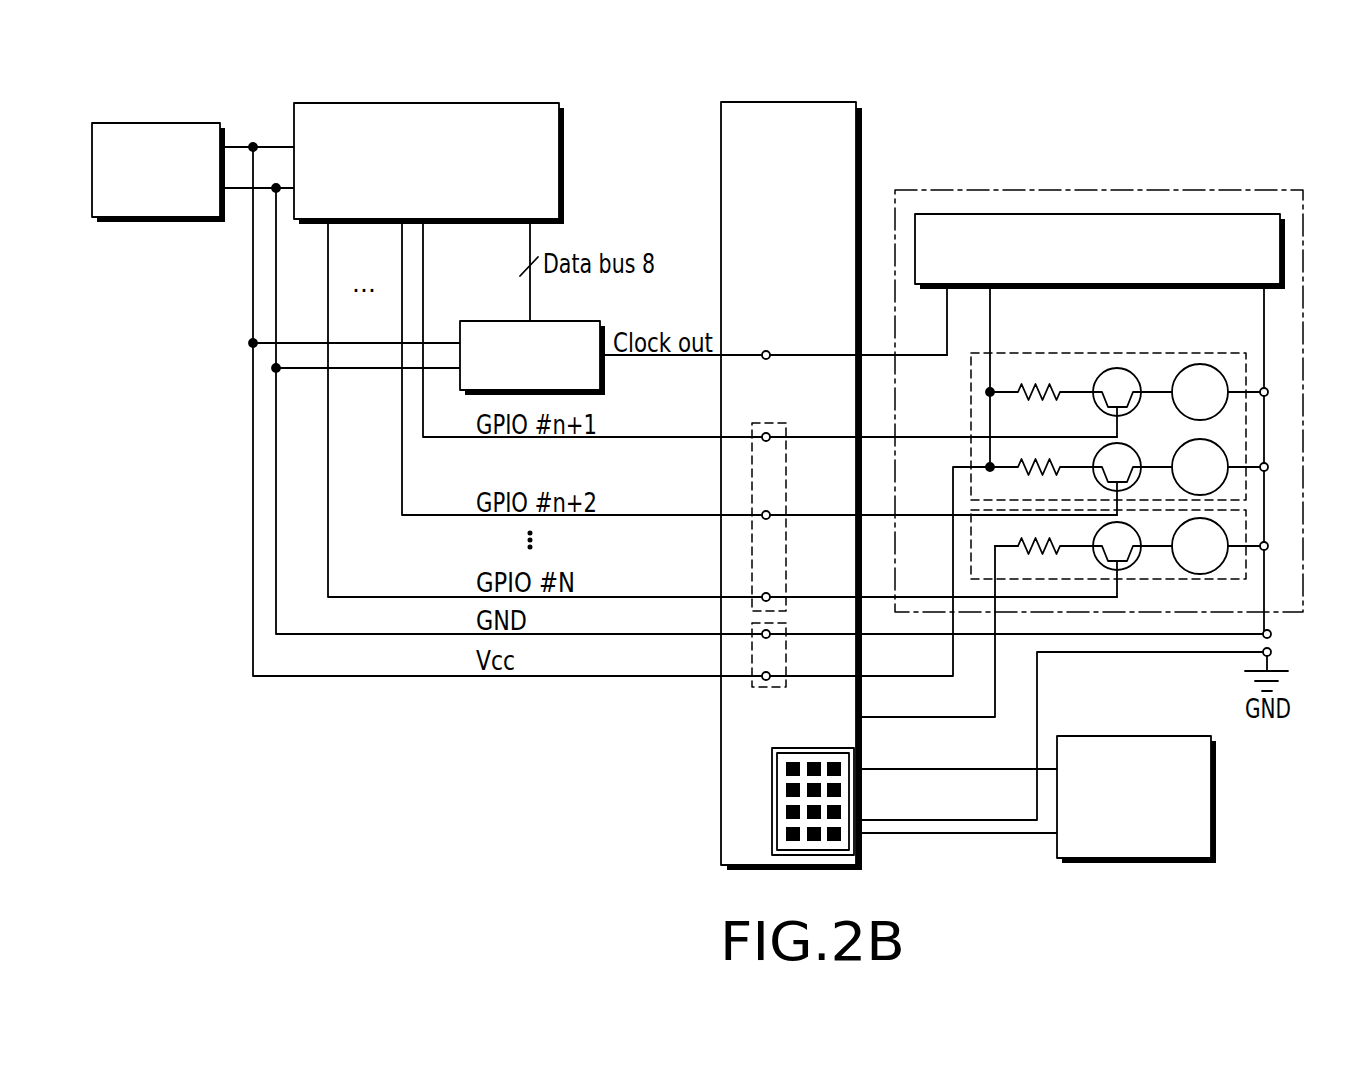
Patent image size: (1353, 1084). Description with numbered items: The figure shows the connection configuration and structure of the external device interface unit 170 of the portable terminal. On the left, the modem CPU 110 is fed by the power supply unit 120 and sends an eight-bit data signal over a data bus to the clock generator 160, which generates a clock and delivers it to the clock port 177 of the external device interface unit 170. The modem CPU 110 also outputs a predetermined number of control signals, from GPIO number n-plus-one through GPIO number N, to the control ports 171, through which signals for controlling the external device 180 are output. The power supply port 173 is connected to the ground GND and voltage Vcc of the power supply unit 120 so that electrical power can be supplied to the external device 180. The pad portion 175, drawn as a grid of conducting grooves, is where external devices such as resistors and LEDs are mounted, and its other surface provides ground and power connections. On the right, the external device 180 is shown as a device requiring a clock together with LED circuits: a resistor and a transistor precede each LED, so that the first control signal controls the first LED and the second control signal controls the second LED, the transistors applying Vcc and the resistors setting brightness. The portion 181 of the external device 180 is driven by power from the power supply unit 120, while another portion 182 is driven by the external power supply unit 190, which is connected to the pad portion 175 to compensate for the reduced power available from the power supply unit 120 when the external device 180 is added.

The modem CPU 110 is at (453, 103).
The power supply unit 120 is at (163, 123).
The clock generator 160 is at (557, 321).
The external device interface unit 170 is at (815, 102).
The control ports 171 is at (768, 420).
The power supply port 173 is at (770, 687).
The pad portion 175 is at (772, 800).
The clock port 177 is at (768, 351).
The external device 180 is at (1102, 190).
The portion of the external device 181 is at (1120, 353).
The another portion of the external device 182 is at (1130, 580).
The external power supply unit 190 is at (1132, 736).